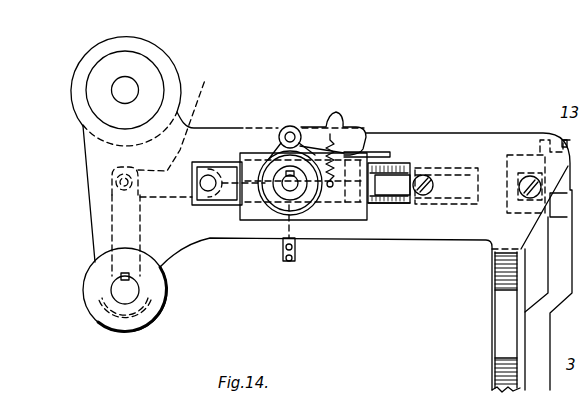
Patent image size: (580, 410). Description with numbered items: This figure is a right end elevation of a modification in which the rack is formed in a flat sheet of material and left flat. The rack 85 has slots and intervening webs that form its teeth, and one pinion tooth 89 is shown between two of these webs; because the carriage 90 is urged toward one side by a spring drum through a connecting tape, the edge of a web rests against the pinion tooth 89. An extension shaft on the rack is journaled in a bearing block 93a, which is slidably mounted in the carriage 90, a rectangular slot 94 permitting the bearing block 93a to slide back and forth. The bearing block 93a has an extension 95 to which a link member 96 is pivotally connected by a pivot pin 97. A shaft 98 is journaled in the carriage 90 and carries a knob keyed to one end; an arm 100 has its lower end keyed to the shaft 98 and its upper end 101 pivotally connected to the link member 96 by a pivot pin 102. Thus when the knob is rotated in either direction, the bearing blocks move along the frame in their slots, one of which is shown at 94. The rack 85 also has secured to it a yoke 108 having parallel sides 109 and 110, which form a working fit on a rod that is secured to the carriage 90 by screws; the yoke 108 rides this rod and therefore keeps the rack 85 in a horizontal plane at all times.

The rack 85 is at (348, 187).
The pinion tooth 89 is at (298, 252).
The carriage 90 is at (445, 142).
The bearing block 93a is at (250, 155).
The rectangular slot 94 is at (208, 192).
The extension 95 is at (225, 167).
The link member 96 is at (177, 116).
The pivot pin 97 is at (225, 205).
The shaft 98 is at (130, 298).
The arm 100 is at (98, 288).
The upper end of arm 101 is at (115, 232).
The pivot pin 102 is at (108, 188).
The yoke 108 is at (403, 197).
The parallel side of yoke 109 is at (403, 160).
The parallel side of yoke 110 is at (382, 206).